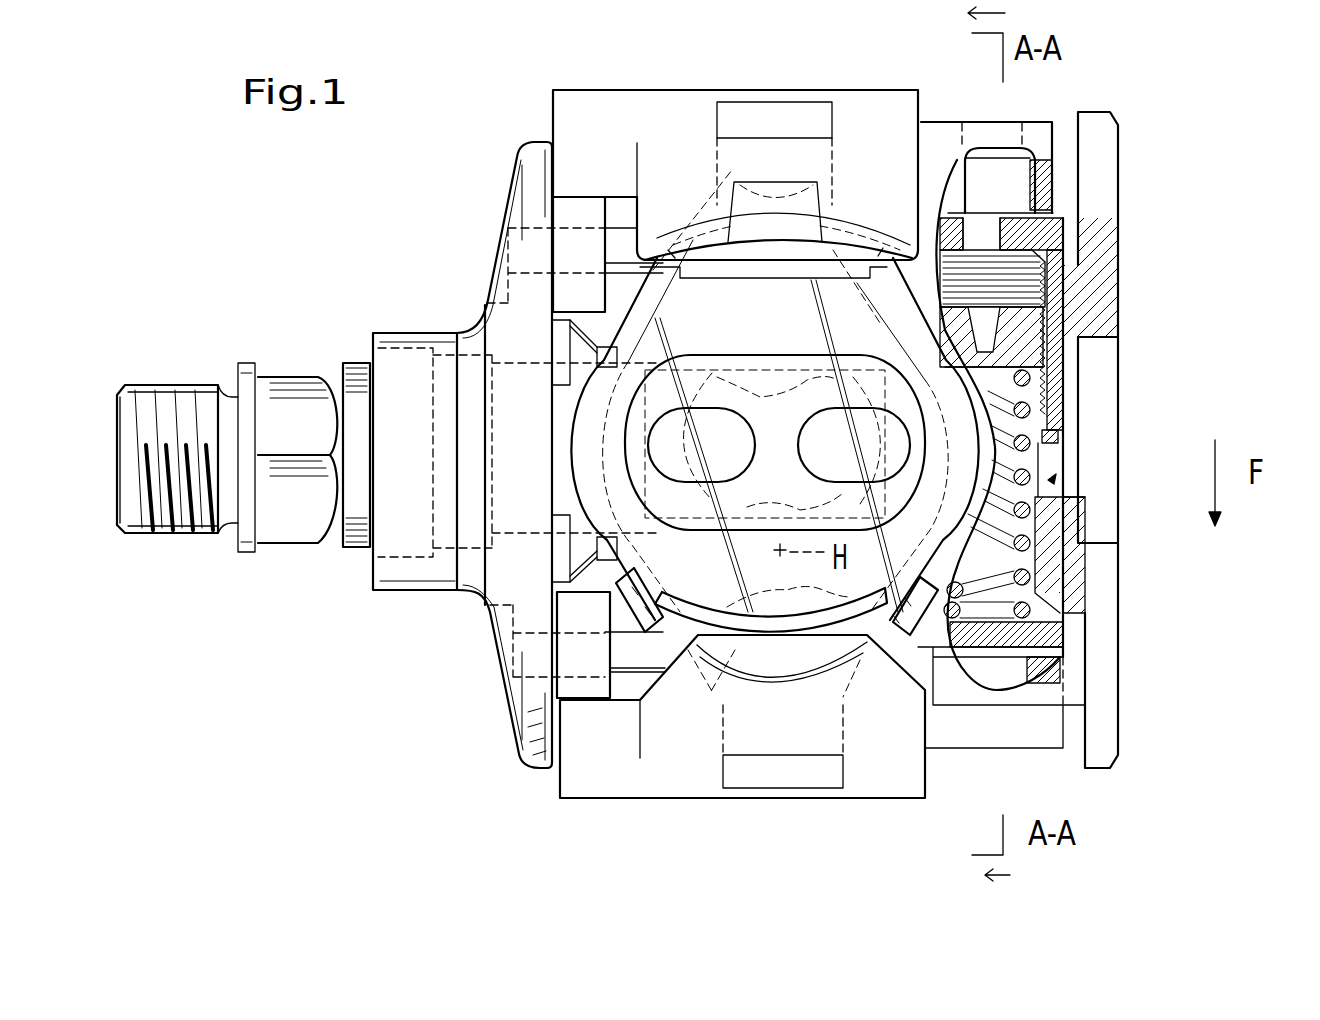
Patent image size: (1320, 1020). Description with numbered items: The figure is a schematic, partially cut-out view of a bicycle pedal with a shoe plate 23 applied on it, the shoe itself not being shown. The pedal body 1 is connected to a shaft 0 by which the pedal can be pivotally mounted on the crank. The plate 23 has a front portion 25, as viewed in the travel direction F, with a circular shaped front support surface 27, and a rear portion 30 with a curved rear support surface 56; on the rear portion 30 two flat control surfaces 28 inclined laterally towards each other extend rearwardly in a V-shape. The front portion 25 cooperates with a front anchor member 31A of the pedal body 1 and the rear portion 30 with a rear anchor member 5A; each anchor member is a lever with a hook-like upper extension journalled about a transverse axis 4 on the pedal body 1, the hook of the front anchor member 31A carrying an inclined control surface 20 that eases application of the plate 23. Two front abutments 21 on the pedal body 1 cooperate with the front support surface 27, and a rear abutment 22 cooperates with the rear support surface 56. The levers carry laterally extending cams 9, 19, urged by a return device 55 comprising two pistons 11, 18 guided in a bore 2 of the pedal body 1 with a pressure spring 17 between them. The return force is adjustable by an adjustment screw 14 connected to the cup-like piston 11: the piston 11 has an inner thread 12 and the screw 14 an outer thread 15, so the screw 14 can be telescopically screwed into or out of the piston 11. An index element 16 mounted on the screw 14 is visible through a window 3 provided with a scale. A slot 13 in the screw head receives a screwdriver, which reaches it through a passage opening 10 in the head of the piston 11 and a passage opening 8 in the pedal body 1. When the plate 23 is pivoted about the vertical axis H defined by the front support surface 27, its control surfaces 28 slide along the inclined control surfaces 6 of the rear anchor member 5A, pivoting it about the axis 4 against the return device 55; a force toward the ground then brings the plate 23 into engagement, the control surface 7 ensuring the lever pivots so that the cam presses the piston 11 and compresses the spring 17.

The shaft 0 is at (318, 395).
The pedal body 1 is at (403, 365).
The bore 2 is at (1055, 522).
The window 3 is at (1082, 445).
The transverse axis 4 is at (623, 255).
The rear anchor member 5A is at (565, 118).
The control surfaces 6 is at (702, 227).
The control surface 7 is at (778, 232).
The passage opening 8 is at (1000, 150).
The cam 9 is at (1043, 180).
The passage opening 10 is at (990, 228).
The piston 11 is at (1052, 230).
The inner thread 12 is at (1070, 280).
The slot 13 is at (990, 318).
The adjustment screw 14 is at (1085, 338).
The outer thread 15 is at (1023, 353).
The index element 16 is at (1072, 432).
The pressure spring 17 is at (1033, 580).
The piston 18 is at (1040, 640).
The cam 19 is at (1040, 710).
The inclined control surface 20 is at (787, 653).
The front abutments 21 is at (645, 595).
The rear abutment 22 is at (778, 195).
The plate 23 is at (612, 420).
The front portion 25 is at (713, 693).
The front support surface 27 is at (757, 673).
The flat control surfaces 28 is at (672, 252).
The rear portion 30 is at (832, 227).
The front anchor member 31A is at (928, 772).
The return device 55 is at (1085, 490).
The rear support surface 56 is at (718, 223).